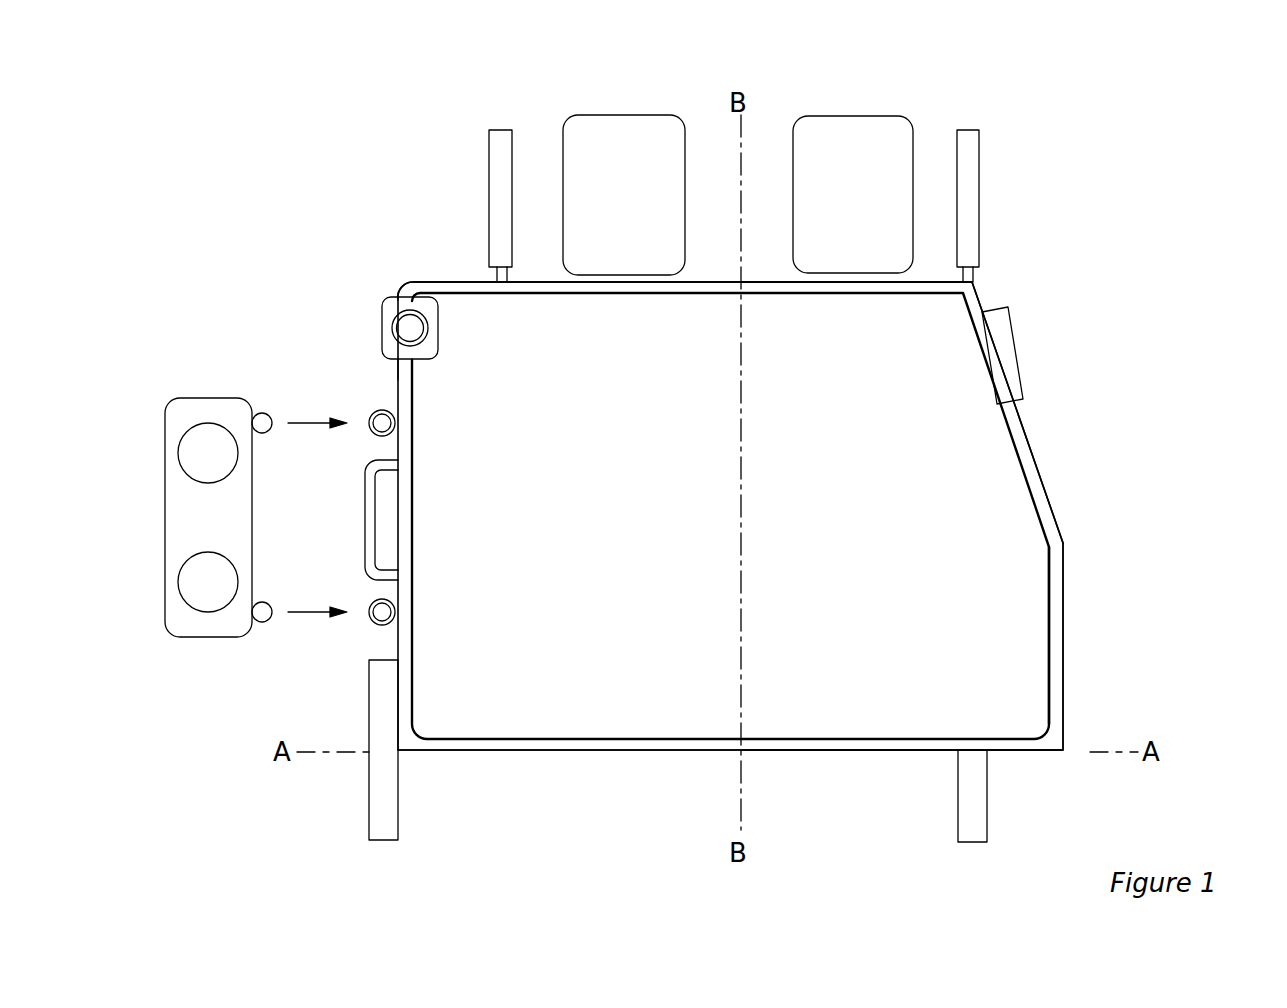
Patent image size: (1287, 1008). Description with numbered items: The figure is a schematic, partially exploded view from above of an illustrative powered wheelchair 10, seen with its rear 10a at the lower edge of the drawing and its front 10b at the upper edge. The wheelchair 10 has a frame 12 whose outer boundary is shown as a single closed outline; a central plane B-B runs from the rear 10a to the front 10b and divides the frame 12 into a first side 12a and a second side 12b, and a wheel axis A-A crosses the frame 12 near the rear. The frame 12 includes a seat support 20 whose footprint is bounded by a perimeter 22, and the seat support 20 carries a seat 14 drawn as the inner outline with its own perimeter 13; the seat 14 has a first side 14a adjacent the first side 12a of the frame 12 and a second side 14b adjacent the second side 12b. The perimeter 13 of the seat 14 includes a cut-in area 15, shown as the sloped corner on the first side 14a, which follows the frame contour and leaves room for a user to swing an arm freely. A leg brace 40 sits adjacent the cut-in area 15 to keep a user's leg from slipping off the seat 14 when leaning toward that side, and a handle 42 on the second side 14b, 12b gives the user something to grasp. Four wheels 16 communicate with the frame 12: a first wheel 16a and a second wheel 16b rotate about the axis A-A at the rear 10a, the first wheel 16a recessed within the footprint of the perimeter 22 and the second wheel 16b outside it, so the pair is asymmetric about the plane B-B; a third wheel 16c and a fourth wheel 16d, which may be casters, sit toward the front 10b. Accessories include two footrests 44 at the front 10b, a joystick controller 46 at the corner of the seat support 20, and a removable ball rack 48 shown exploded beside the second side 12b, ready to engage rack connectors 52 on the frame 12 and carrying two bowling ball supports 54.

The wheelchair 10 is at (1172, 190).
The rear 10a is at (930, 848).
The front 10b is at (940, 98).
The frame 12 is at (1066, 545).
The first side of the frame 12a is at (858, 752).
The second side of the frame 12b is at (577, 752).
The perimeter of the seat 13 is at (1049, 632).
The seat 14 is at (1032, 690).
The first side of the seat 14a is at (841, 529).
The second side of the seat 14b is at (560, 529).
The cut-in area 15 is at (992, 452).
The wheels 16 is at (501, 129).
The first wheel 16a is at (978, 822).
The second wheel 16b is at (385, 822).
The third wheel 16c is at (970, 156).
The fourth wheel 16d is at (496, 160).
The seat support 20 is at (415, 292).
The perimeter of the seat support 22 is at (464, 280).
The leg brace 40 is at (1000, 323).
The handle 42 is at (366, 519).
The footrest 44 is at (623, 115).
The joystick controller 46 is at (394, 320).
The ball rack 48 is at (173, 410).
The rack connectors 52 is at (370, 434).
The bowling ball supports 54 is at (184, 455).